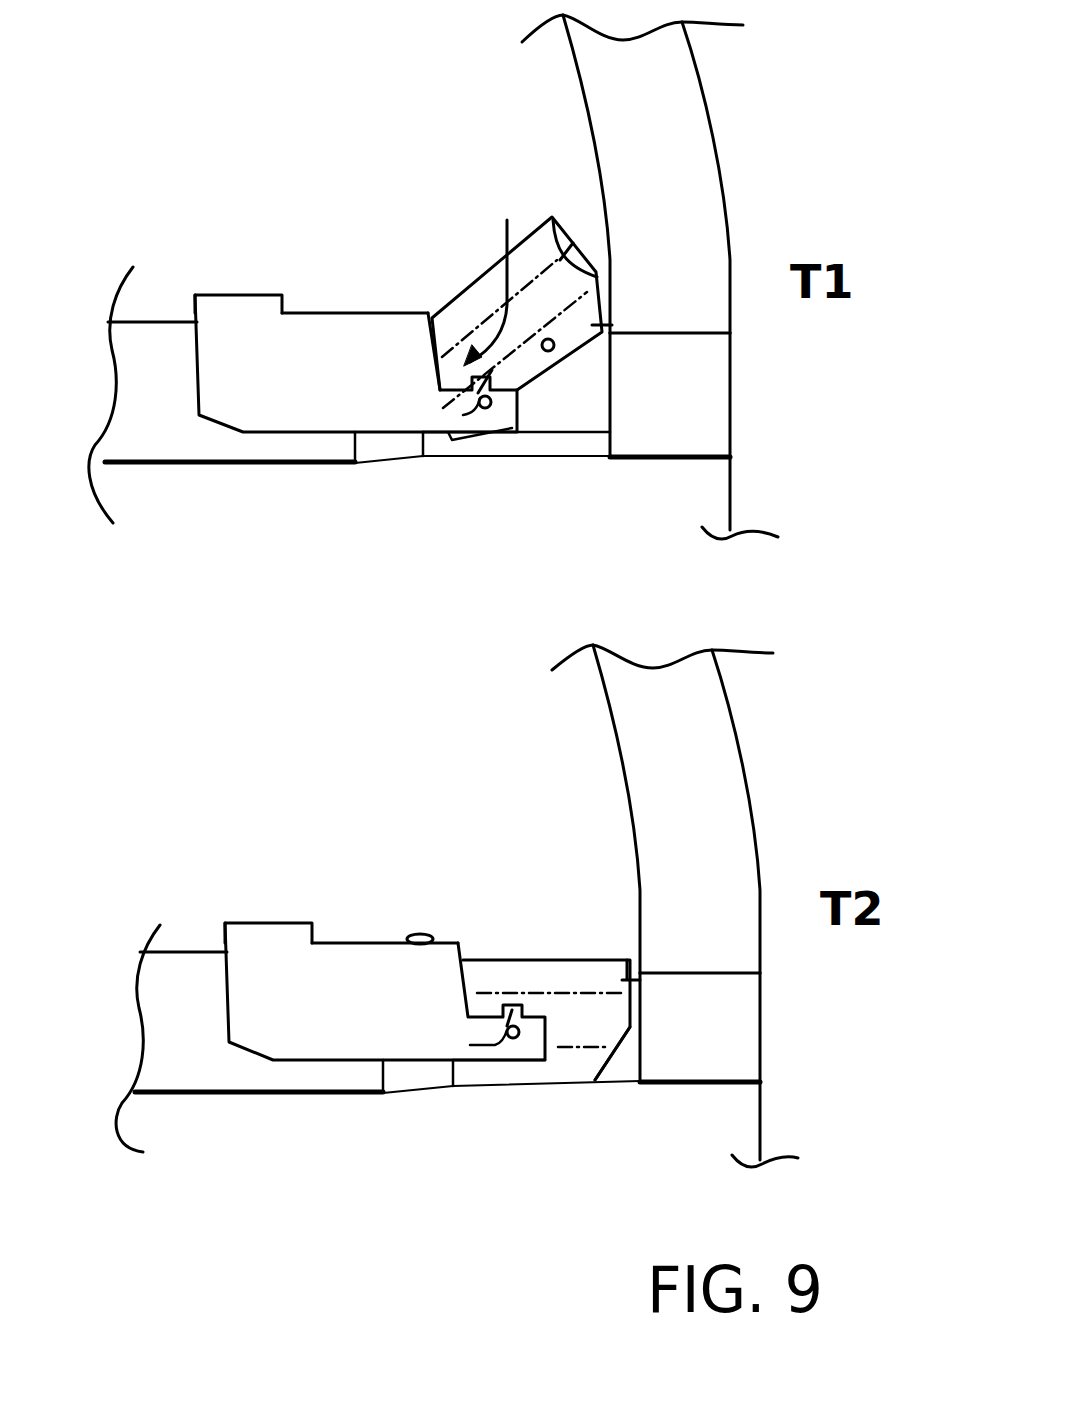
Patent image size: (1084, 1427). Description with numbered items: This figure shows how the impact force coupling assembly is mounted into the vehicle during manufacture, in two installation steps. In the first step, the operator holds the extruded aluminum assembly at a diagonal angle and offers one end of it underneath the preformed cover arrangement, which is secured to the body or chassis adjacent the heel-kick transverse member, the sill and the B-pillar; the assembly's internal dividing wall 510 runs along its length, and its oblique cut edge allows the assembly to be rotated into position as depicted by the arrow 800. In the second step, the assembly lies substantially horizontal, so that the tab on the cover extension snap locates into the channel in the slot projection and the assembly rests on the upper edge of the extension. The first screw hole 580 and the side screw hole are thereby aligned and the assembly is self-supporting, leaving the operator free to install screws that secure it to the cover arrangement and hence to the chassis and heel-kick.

The dividing wall 510 is at (540, 993).
The first screw hole 580 is at (412, 935).
The arrow 800 is at (507, 232).